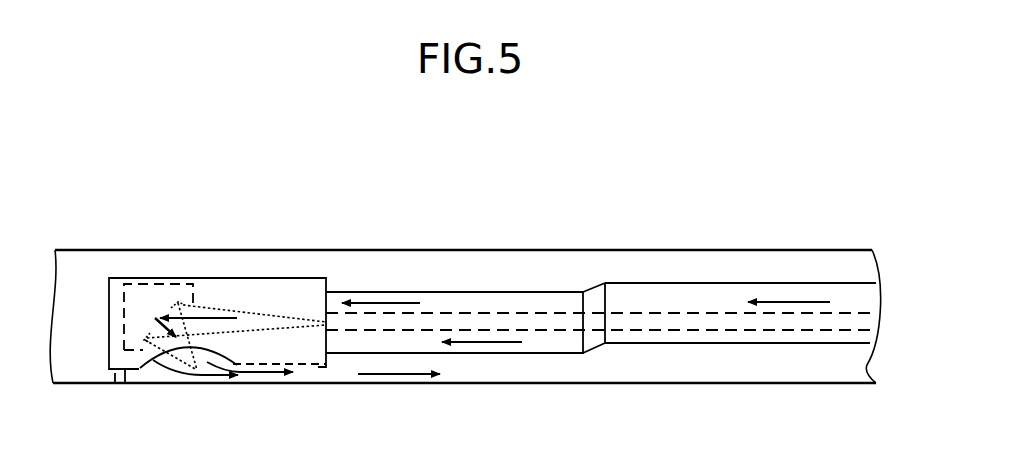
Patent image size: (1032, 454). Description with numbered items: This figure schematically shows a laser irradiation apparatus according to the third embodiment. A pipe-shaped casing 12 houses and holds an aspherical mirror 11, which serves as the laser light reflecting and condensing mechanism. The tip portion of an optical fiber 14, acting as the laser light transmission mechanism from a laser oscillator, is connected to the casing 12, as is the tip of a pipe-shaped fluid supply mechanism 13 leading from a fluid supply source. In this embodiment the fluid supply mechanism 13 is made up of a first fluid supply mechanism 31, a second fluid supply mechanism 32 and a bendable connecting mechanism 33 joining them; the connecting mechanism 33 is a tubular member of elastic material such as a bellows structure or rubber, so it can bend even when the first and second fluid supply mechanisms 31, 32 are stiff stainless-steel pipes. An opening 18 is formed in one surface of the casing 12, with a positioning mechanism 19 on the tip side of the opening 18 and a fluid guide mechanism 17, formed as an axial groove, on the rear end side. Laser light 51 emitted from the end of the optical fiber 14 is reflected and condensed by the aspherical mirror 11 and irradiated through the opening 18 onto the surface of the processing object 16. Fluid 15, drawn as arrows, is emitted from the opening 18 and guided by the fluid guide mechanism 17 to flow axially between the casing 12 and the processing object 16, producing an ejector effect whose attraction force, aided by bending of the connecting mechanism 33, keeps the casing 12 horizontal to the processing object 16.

The aspherical mirror 11 is at (150, 288).
The casing 12 is at (313, 277).
The fluid supply mechanism 13 is at (652, 268).
The optical fiber 14 is at (432, 311).
The fluid 15 is at (392, 376).
The processing object 16 is at (75, 385).
The fluid guide mechanism 17 is at (300, 366).
The opening 18 is at (150, 373).
The positioning mechanism 19 is at (115, 384).
The first fluid supply mechanism 31 is at (482, 302).
The second fluid supply mechanism 32 is at (692, 290).
The connecting mechanism 33 is at (590, 298).
The laser light 51 is at (262, 318).